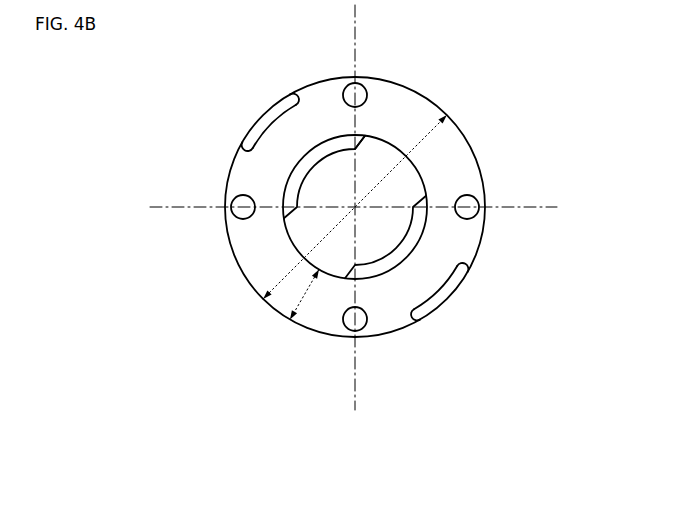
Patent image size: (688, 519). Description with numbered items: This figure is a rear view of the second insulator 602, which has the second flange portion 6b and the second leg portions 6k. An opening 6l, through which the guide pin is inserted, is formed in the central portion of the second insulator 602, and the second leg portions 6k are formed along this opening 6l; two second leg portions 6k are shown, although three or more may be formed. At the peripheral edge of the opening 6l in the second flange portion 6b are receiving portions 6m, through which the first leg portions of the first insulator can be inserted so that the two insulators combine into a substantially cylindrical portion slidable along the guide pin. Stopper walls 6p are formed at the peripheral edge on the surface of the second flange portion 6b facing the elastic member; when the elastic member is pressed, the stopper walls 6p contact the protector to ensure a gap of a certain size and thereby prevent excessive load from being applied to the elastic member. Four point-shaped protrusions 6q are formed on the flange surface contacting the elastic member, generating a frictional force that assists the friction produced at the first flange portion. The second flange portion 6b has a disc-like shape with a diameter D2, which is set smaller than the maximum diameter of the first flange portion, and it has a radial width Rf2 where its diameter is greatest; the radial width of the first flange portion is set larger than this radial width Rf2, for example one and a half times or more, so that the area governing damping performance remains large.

The second insulator 602 is at (351, 187).
The second flange portion 6b is at (483, 178).
The second leg portions 6k is at (409, 167).
The opening 6l is at (342, 150).
The receiving portions 6m is at (366, 139).
The point-shaped protrusions 6q is at (235, 218).
The stopper walls 6p is at (443, 293).
The diameter D2 is at (355, 207).
The radial width Rf2 is at (315, 294).